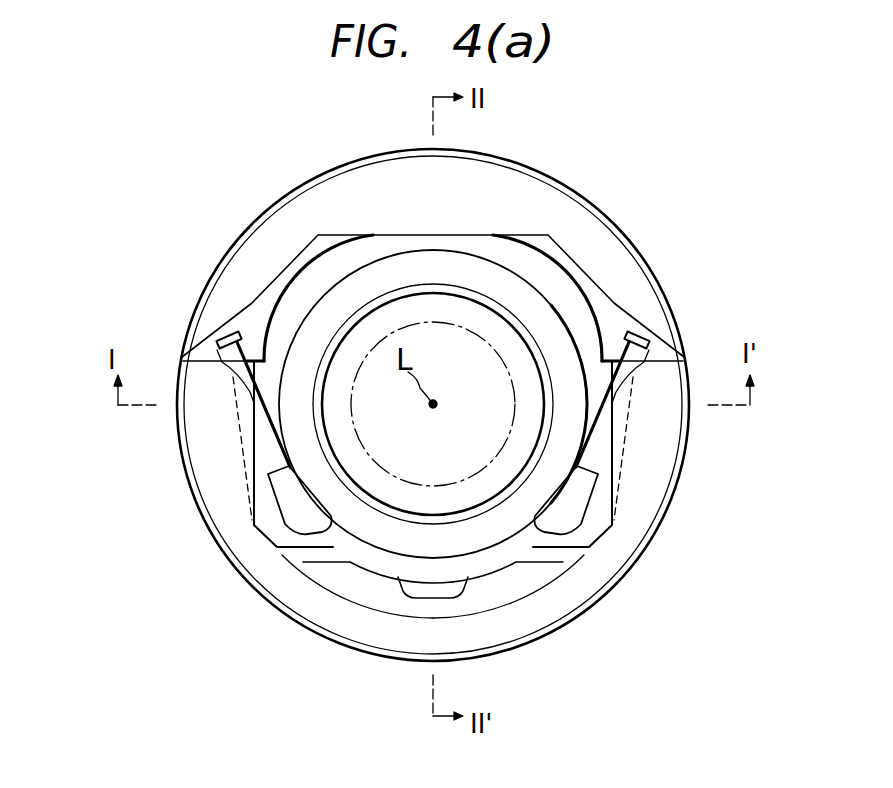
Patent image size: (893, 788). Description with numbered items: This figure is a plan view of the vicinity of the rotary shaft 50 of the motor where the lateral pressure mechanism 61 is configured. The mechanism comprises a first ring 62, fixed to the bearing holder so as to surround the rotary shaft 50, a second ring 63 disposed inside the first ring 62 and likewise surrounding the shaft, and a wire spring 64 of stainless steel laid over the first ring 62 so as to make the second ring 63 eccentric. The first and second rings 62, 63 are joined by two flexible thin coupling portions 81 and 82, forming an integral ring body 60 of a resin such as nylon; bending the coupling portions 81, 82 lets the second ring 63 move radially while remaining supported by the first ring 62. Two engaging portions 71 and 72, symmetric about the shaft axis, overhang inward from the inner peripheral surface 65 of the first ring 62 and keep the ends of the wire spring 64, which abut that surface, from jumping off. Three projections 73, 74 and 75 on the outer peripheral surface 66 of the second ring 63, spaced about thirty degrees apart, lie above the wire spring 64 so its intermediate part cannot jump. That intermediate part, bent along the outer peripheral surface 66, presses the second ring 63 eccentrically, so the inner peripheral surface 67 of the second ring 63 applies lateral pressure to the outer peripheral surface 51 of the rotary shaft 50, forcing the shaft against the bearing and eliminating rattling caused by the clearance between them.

The rotary shaft 50 is at (413, 323).
The outer peripheral surface 51 is at (378, 343).
The ring body 60 is at (792, 443).
The lateral pressure mechanism 61 is at (650, 188).
The first ring 62 is at (660, 413).
The second ring 63 is at (560, 335).
The wire spring 64 is at (597, 437).
The inner peripheral surface 65 is at (557, 282).
The outer peripheral surface 66 is at (521, 273).
The inner peripheral surface 67 is at (472, 299).
The engaging portion 71 is at (240, 433).
The engaging portion 72 is at (627, 427).
The projection 73 is at (280, 498).
The projection 74 is at (453, 590).
The projection 75 is at (580, 487).
The coupling portion 81 is at (283, 560).
The coupling portion 82 is at (583, 565).